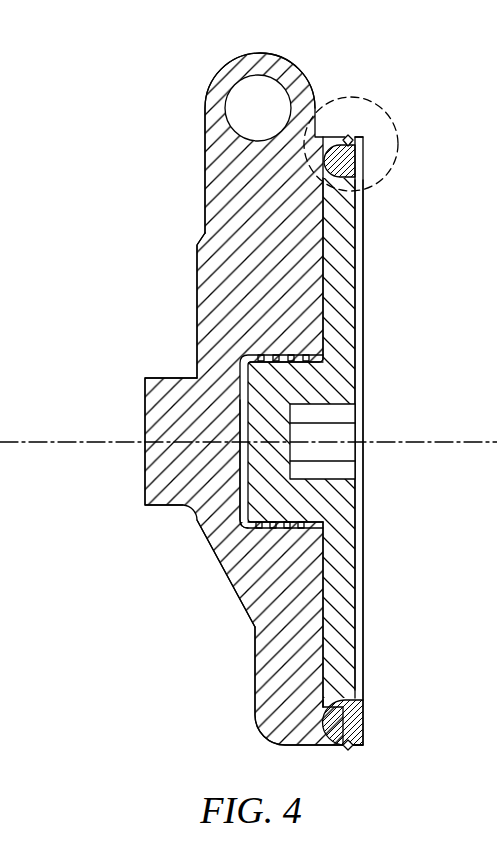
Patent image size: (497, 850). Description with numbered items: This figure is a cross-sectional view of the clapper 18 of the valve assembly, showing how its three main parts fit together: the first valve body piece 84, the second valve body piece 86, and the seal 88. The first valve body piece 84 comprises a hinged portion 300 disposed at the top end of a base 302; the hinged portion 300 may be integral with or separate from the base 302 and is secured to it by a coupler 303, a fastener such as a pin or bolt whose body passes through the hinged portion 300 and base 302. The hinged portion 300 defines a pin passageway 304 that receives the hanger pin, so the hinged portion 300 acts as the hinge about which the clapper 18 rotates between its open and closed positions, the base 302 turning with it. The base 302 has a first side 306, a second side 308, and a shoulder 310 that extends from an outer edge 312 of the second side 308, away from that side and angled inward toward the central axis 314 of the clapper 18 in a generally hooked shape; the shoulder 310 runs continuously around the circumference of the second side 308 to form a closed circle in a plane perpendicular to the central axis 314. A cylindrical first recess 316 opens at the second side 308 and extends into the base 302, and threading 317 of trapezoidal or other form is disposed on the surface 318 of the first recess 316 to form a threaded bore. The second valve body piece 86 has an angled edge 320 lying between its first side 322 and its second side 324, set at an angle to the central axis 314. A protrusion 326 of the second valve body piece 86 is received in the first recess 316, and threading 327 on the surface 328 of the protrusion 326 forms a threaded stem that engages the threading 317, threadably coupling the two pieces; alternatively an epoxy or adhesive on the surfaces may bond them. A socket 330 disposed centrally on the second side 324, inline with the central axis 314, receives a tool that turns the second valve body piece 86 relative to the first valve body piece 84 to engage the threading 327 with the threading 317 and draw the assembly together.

The clapper 18 is at (118, 41).
The first valve body piece 84 is at (170, 212).
The second valve body piece 86 is at (385, 522).
The seal 88 is at (367, 152).
The hinged portion 300 is at (205, 100).
The base 302 is at (237, 272).
The coupler 303 is at (144, 458).
The pin passageway 304 is at (256, 90).
The first side 306 is at (222, 568).
The second side 308 is at (300, 650).
The shoulder 310 is at (363, 137).
The outer edge 312 is at (345, 135).
The central axis 314 is at (41, 441).
The first recess 316 is at (242, 388).
The threading 317 is at (340, 355).
The surface 318 is at (262, 356).
The angled edge 320 is at (365, 183).
The first side 322 is at (340, 667).
The second side 324 is at (365, 278).
The protrusion 326 is at (243, 487).
The threading 327 is at (273, 523).
The surface 328 is at (340, 493).
The socket 330 is at (358, 434).